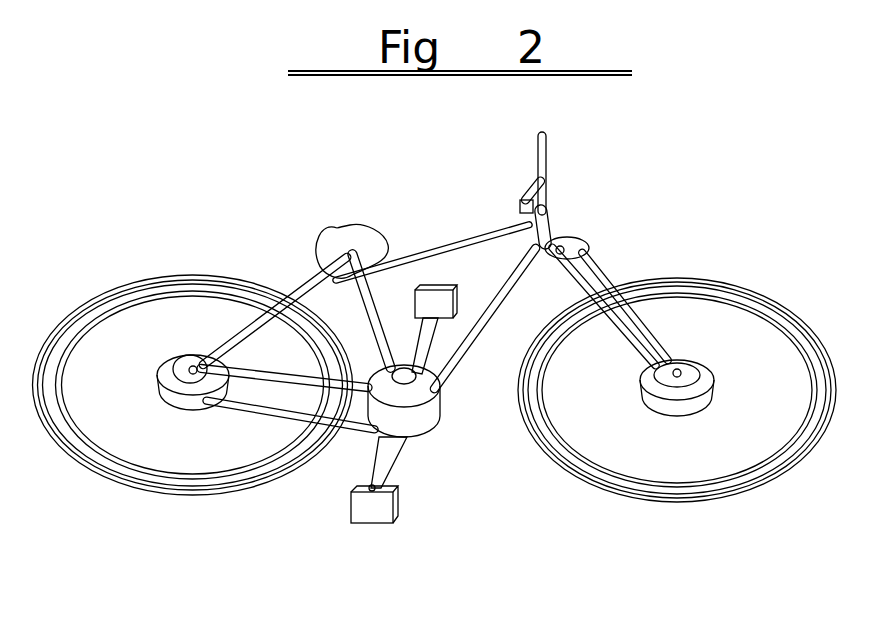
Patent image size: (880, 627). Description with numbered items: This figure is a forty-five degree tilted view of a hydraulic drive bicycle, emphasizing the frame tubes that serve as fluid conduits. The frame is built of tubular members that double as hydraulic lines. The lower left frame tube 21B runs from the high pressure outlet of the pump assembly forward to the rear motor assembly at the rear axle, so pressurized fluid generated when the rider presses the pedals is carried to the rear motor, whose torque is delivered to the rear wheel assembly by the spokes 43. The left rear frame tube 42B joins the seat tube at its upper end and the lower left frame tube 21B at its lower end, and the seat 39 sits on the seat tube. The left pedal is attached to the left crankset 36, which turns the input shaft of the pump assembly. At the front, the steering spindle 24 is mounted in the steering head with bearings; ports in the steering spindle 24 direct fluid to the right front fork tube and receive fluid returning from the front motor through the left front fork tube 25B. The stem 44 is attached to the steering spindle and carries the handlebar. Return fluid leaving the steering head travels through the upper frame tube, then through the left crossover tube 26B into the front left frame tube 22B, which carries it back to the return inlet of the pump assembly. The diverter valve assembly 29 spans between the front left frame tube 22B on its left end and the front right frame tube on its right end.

The spokes 43 is at (115, 340).
The left rear frame tube 42B is at (265, 360).
The lower left frame tube 21B is at (240, 410).
The seat 39 is at (337, 230).
The left crankset 36 is at (377, 468).
The diverter valve assembly 29 is at (450, 380).
The front left frame tube 22B is at (498, 313).
The left crossover tube 26B is at (525, 238).
The stem 44 is at (543, 200).
The steering spindle 24 is at (576, 260).
The left front fork tube 25B is at (610, 337).